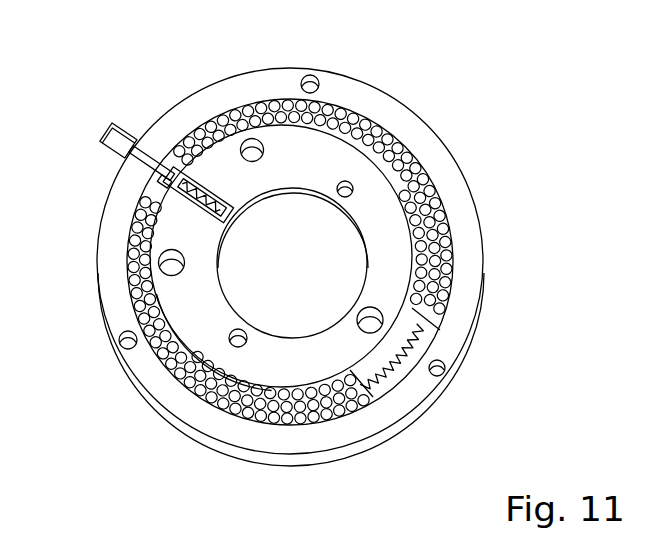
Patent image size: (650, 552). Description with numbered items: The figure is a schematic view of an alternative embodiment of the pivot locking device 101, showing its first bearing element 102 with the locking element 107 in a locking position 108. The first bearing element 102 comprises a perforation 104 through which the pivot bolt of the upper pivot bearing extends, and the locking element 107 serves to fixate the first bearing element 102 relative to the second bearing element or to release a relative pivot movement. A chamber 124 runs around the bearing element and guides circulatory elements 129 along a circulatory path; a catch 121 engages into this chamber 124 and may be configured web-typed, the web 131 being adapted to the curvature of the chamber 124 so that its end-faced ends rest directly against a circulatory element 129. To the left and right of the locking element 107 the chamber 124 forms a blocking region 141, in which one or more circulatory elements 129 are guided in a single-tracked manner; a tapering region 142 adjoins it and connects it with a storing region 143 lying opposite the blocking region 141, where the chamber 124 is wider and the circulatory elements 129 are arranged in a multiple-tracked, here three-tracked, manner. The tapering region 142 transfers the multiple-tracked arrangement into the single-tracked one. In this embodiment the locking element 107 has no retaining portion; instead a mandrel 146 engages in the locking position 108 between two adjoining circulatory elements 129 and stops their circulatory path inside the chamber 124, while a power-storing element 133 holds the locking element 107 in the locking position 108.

The pivot locking device 101 is at (508, 132).
The first bearing element 102 is at (480, 92).
The perforation 104 is at (242, 212).
The locking element 107 is at (150, 170).
The locking position 108 is at (149, 141).
The catch 121 is at (461, 359).
The chamber 124 is at (448, 194).
The circulatory elements 129 is at (452, 290).
The web 131 is at (418, 324).
The power-storing element 133 is at (200, 207).
The blocking region 141 is at (172, 126).
The tapering region 142 is at (403, 114).
The storing region 143 is at (466, 300).
The mandrel 146 is at (153, 167).